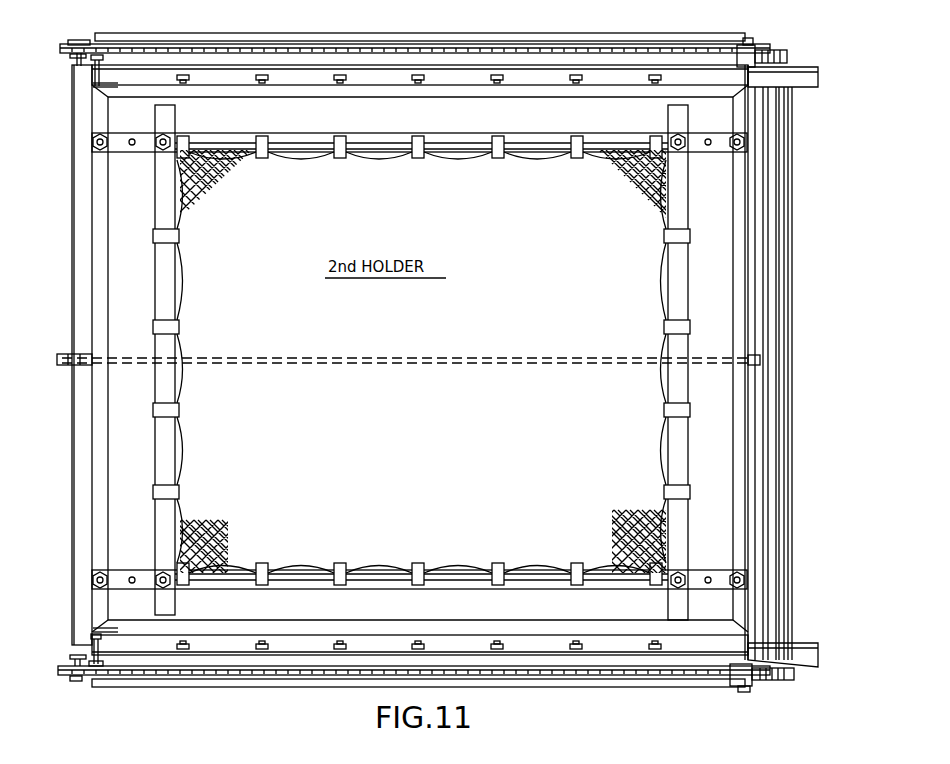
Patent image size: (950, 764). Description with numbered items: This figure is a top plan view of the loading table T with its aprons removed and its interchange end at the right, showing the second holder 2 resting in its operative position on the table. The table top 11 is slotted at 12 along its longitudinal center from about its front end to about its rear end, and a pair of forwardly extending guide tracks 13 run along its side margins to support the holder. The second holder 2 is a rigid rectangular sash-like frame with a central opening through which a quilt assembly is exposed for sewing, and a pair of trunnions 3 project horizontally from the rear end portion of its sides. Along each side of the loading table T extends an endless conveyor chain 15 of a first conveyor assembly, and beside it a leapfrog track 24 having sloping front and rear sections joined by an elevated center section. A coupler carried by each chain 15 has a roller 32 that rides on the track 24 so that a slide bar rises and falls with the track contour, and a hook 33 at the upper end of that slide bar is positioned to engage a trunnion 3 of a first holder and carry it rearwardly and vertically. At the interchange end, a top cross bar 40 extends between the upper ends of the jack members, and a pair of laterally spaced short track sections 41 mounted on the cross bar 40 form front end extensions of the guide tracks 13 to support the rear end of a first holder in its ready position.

The loading table T is at (62, 74).
The second holder 2 is at (190, 628).
The trunnion 3 is at (100, 62).
The table top 11 is at (78, 206).
The slot 12 is at (360, 358).
The guide track 13 is at (385, 78).
The endless conveyor chain 15 is at (215, 50).
The track 24 is at (522, 36).
The roller 32 is at (746, 46).
The hook 33 is at (768, 682).
The top cross bar 40 is at (790, 306).
The short track section 41 is at (806, 80).